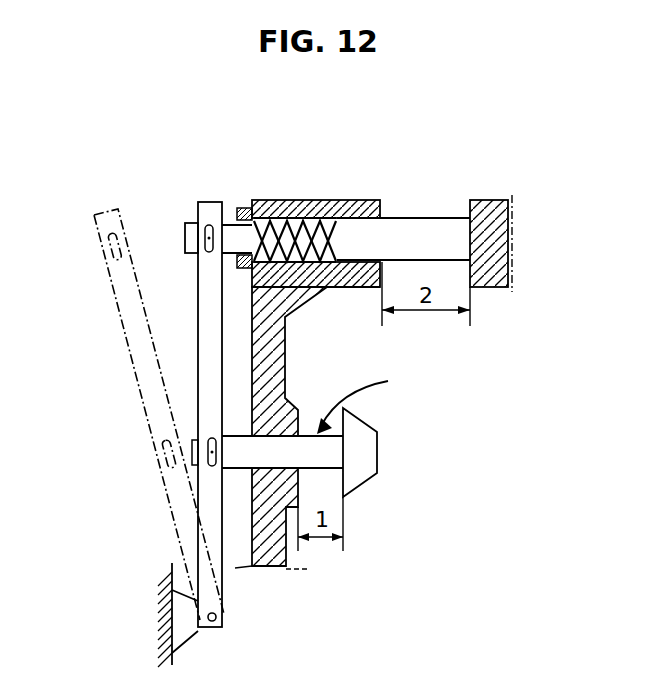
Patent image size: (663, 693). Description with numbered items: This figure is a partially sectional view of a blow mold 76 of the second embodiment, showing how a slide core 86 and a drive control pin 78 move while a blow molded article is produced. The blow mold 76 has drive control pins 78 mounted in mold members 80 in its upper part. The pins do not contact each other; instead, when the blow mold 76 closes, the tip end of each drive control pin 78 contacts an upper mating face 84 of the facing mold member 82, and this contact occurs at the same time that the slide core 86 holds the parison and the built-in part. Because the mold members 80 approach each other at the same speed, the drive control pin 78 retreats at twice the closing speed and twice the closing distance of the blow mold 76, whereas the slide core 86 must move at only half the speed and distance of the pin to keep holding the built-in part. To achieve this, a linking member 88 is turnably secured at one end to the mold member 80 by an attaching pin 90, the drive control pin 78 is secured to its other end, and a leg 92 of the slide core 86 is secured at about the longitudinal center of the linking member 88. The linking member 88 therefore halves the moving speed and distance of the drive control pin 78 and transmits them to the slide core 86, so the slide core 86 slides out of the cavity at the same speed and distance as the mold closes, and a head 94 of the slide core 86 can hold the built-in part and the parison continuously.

The blow mold 76 is at (273, 201).
The drive control pin 78 is at (403, 237).
The mold member 80 is at (286, 356).
The facing mold member 82 is at (358, 200).
The upper mating face 84 is at (472, 205).
The slide core 86 is at (388, 381).
The linking member 88 is at (197, 336).
The attaching pin 90 is at (226, 618).
The leg 92 is at (257, 455).
The head 94 is at (362, 453).